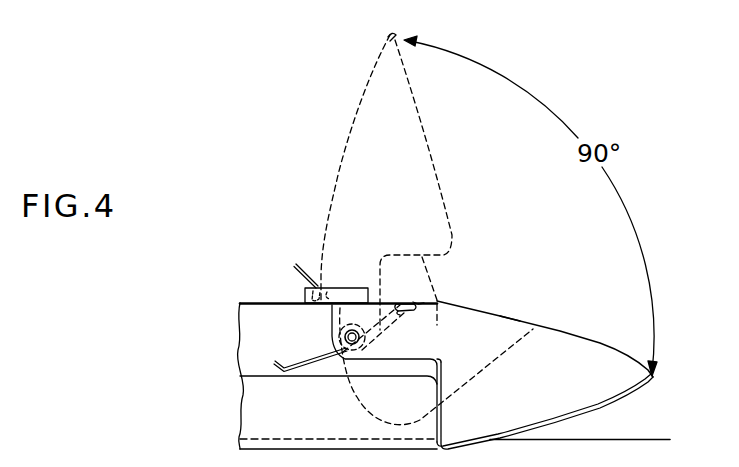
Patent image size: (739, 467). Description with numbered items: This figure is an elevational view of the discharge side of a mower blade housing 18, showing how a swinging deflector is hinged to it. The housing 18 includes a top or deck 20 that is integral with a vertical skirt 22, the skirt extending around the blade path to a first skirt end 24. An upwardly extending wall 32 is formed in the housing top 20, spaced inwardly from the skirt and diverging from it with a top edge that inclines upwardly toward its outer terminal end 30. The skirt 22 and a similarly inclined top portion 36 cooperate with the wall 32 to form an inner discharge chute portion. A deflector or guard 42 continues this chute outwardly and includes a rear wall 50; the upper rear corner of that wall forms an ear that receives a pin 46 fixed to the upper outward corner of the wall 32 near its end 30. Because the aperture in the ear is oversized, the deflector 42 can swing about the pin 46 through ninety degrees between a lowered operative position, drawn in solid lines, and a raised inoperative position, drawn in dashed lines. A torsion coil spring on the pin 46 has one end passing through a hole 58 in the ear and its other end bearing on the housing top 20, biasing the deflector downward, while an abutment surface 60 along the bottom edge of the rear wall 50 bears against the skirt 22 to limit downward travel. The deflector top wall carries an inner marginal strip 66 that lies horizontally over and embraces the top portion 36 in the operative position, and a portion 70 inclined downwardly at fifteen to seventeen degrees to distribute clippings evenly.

The mower blade housing 18 is at (240, 363).
The top or deck 20 is at (257, 376).
The vertical skirt 22 is at (315, 418).
The first skirt end 24 is at (441, 416).
The outer terminal end 30 is at (365, 360).
The upwardly extending wall 32 is at (313, 343).
The top portion 36 is at (283, 302).
The deflector or guard 42 is at (349, 121).
The pin 46 is at (357, 329).
The rear wall 50 is at (566, 379).
The hole 58 is at (416, 311).
The abutment surface 60 is at (436, 397).
The inner marginal strip 66 is at (419, 302).
The top wall portion 70 is at (508, 320).